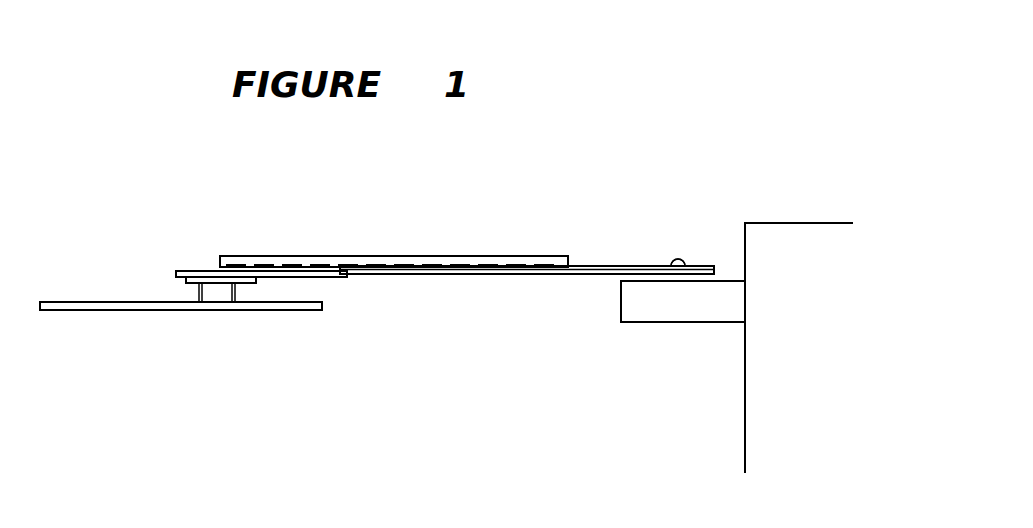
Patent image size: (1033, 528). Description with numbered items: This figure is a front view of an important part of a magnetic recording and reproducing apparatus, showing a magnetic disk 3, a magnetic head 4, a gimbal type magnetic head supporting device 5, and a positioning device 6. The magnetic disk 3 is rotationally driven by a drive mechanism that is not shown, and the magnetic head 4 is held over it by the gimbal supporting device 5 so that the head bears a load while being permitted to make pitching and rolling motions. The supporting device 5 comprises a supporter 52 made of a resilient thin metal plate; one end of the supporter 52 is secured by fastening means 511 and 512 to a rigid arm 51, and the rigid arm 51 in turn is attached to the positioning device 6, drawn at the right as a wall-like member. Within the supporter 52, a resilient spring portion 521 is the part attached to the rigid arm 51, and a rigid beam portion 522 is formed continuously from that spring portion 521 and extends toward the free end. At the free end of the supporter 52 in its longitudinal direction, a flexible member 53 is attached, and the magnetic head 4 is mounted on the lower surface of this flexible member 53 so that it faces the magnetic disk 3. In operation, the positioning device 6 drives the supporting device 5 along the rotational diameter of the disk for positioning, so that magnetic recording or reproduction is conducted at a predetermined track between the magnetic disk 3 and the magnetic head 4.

The magnetic disk 3 is at (95, 302).
The magnetic head 4 is at (223, 292).
The gimbal type magnetic head supporting device 5 is at (383, 394).
The positioning device 6 is at (790, 223).
The rigid arm 51 is at (655, 303).
The supporter 52 is at (345, 257).
The flexible member 53 is at (192, 271).
The fastening means 511 is at (672, 262).
The fastening means 512 is at (678, 262).
The resilient spring portion 521 is at (580, 274).
The rigid beam portion 522 is at (430, 274).